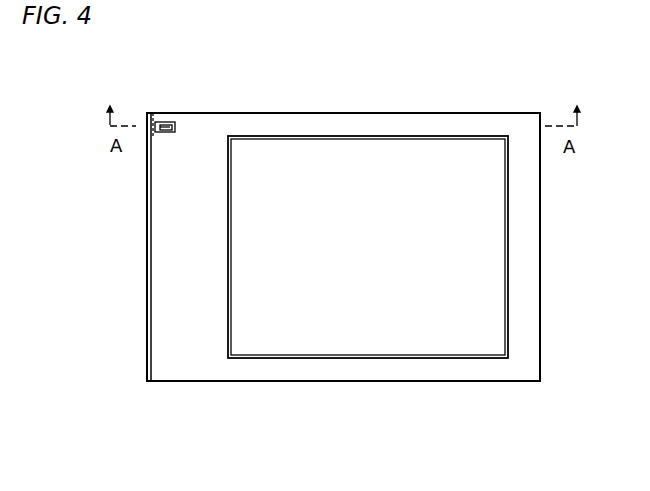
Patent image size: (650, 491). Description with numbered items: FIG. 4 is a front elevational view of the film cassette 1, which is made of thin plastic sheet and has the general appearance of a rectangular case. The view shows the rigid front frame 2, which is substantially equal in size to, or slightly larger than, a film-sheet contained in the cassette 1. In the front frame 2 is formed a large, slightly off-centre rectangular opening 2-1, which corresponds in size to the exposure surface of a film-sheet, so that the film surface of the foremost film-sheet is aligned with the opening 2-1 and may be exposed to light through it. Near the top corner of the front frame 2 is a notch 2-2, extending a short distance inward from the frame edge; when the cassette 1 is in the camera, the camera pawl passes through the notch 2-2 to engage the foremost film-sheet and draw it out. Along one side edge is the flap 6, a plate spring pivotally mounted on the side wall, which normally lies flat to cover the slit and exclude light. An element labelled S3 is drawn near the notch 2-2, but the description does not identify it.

The cassette 1 is at (393, 113).
The front frame 2 is at (541, 233).
The rectangular opening 2-1 is at (466, 355).
The notch 2-2 is at (150, 128).
The flap 6 is at (148, 262).
The switch S3 is at (165, 123).